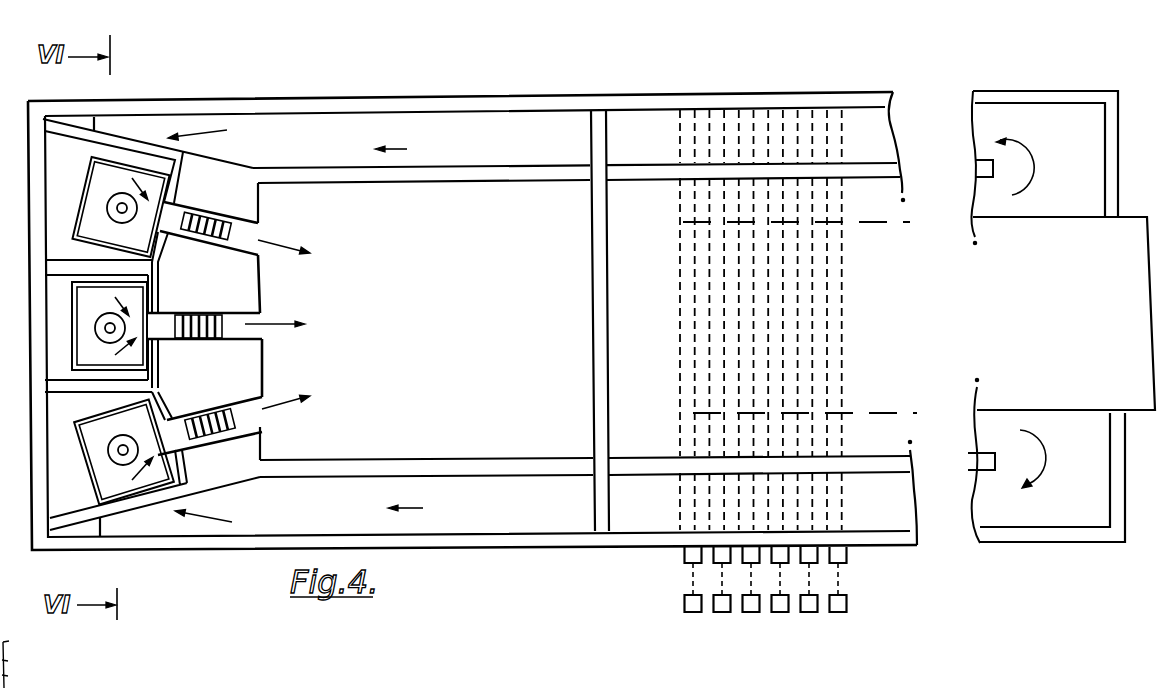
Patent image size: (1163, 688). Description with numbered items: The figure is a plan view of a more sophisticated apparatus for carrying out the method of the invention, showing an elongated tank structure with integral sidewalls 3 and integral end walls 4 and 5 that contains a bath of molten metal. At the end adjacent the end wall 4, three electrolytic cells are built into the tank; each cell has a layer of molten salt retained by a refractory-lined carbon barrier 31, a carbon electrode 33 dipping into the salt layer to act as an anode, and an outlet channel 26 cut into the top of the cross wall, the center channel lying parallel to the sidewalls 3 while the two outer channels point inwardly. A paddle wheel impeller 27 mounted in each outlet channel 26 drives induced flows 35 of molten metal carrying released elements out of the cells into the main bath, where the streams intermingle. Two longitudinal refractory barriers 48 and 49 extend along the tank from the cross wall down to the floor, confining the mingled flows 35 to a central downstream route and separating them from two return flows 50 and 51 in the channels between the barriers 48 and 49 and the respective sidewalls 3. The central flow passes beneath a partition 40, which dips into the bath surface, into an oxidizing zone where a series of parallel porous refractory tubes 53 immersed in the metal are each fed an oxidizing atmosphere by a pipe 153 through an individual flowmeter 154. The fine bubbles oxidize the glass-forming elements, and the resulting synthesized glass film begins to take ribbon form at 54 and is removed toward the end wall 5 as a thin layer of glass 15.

The sidewalls 3 is at (272, 105).
The end wall 4 is at (37, 247).
The end wall 5 is at (1110, 137).
The thin layer of glass 15 is at (1067, 321).
The outlet channel 26 is at (173, 218).
The paddle wheel impeller 27 is at (222, 223).
The carbon barrier 31 is at (98, 213).
The carbon electrode 33 is at (122, 217).
The induced flows 35 is at (288, 232).
The partition 40 is at (595, 105).
The longitudinal refractory barrier 48 is at (352, 183).
The longitudinal refractory barrier 49 is at (368, 467).
The return flow 50 is at (407, 146).
The return flow 51 is at (418, 504).
The porous refractory tube 53 is at (688, 553).
The glass ribbon forming region 54 is at (683, 217).
The pipe 153 is at (838, 580).
The flowmeter 154 is at (847, 602).